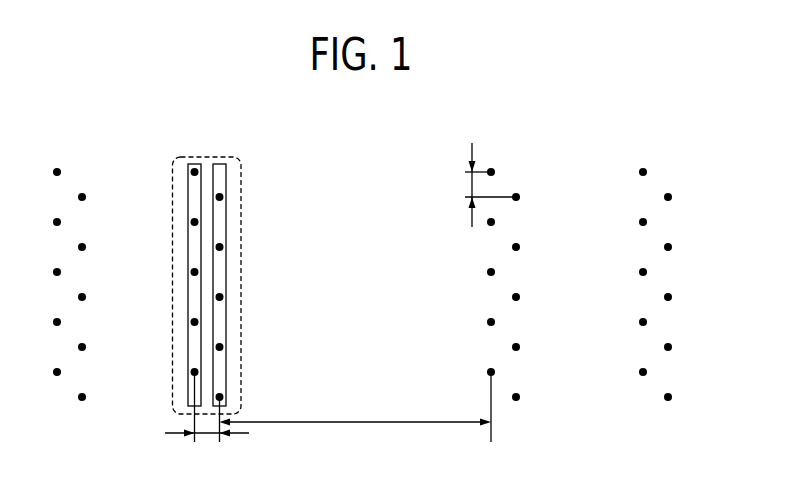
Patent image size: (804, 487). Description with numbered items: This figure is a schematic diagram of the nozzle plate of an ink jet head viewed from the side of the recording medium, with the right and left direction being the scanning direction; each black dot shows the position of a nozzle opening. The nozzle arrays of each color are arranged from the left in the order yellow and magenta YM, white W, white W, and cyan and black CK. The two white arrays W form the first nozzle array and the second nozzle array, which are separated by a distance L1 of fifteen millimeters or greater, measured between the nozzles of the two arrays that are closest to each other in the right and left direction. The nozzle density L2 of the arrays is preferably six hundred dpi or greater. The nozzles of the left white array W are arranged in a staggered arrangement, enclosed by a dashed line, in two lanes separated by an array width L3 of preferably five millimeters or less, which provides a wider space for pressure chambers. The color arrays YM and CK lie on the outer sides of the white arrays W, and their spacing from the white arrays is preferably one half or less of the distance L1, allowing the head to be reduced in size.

The yellow and magenta nozzle arrays YM is at (70, 263).
The white nozzle array W is at (347, 270).
The cyan and black nozzle arrays CK is at (655, 263).
The distance between first and second nozzle arrays L1 is at (356, 407).
The nozzle density L2 is at (475, 185).
The array width L3 is at (207, 424).